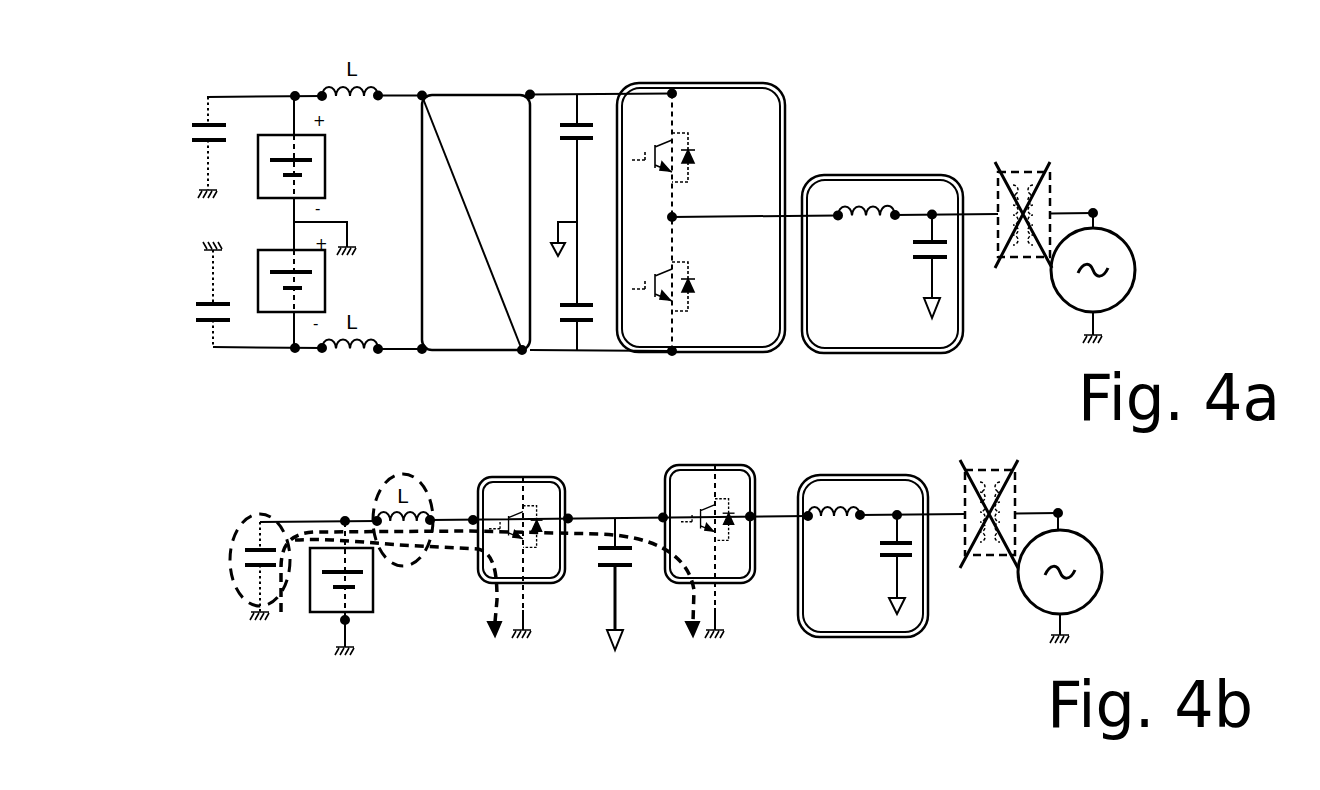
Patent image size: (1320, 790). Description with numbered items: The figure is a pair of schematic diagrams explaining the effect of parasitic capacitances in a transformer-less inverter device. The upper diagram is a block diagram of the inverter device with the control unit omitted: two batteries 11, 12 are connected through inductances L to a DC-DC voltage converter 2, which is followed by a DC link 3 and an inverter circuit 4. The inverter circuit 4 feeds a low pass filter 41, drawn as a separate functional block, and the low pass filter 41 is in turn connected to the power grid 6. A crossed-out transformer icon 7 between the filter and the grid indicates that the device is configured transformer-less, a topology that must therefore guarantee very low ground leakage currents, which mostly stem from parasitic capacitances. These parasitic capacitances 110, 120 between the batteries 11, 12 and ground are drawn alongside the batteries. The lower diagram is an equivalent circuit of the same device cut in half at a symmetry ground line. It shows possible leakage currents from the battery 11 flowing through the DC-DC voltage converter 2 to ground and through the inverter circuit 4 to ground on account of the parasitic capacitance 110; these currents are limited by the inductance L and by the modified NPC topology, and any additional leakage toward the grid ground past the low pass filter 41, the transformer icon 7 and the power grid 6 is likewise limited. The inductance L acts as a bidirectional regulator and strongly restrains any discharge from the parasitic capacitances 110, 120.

In FIG. 4a, the DC-DC voltage converter 2 is at (482, 95).
In FIG. 4b, the DC-DC voltage converter 2 is at (527, 477).
In FIG. 4a, the DC link 3 is at (590, 94).
In FIG. 4b, the DC link 3 is at (617, 518).
In FIG. 4a, the inverter circuit 4 is at (712, 85).
In FIG. 4b, the inverter circuit 4 is at (730, 466).
In FIG. 4a, the low pass filter 41 is at (903, 174).
In FIG. 4b, the low pass filter 41 is at (868, 478).
In FIG. 4a, the power grid 6 is at (1127, 240).
In FIG. 4b, the power grid 6 is at (1102, 560).
In FIG. 4a, the crossed-out transformer icon 7 is at (1032, 171).
In FIG. 4b, the crossed-out transformer icon 7 is at (1016, 488).
In FIG. 4a, the battery 11 is at (276, 135).
In FIG. 4b, the battery 11 is at (374, 604).
In FIG. 4a, the battery 12 is at (279, 312).
In FIG. 4a, the parasitic capacitance 110 is at (192, 140).
In FIG. 4b, the parasitic capacitance 110 is at (246, 567).
In FIG. 4a, the parasitic capacitance 120 is at (207, 326).